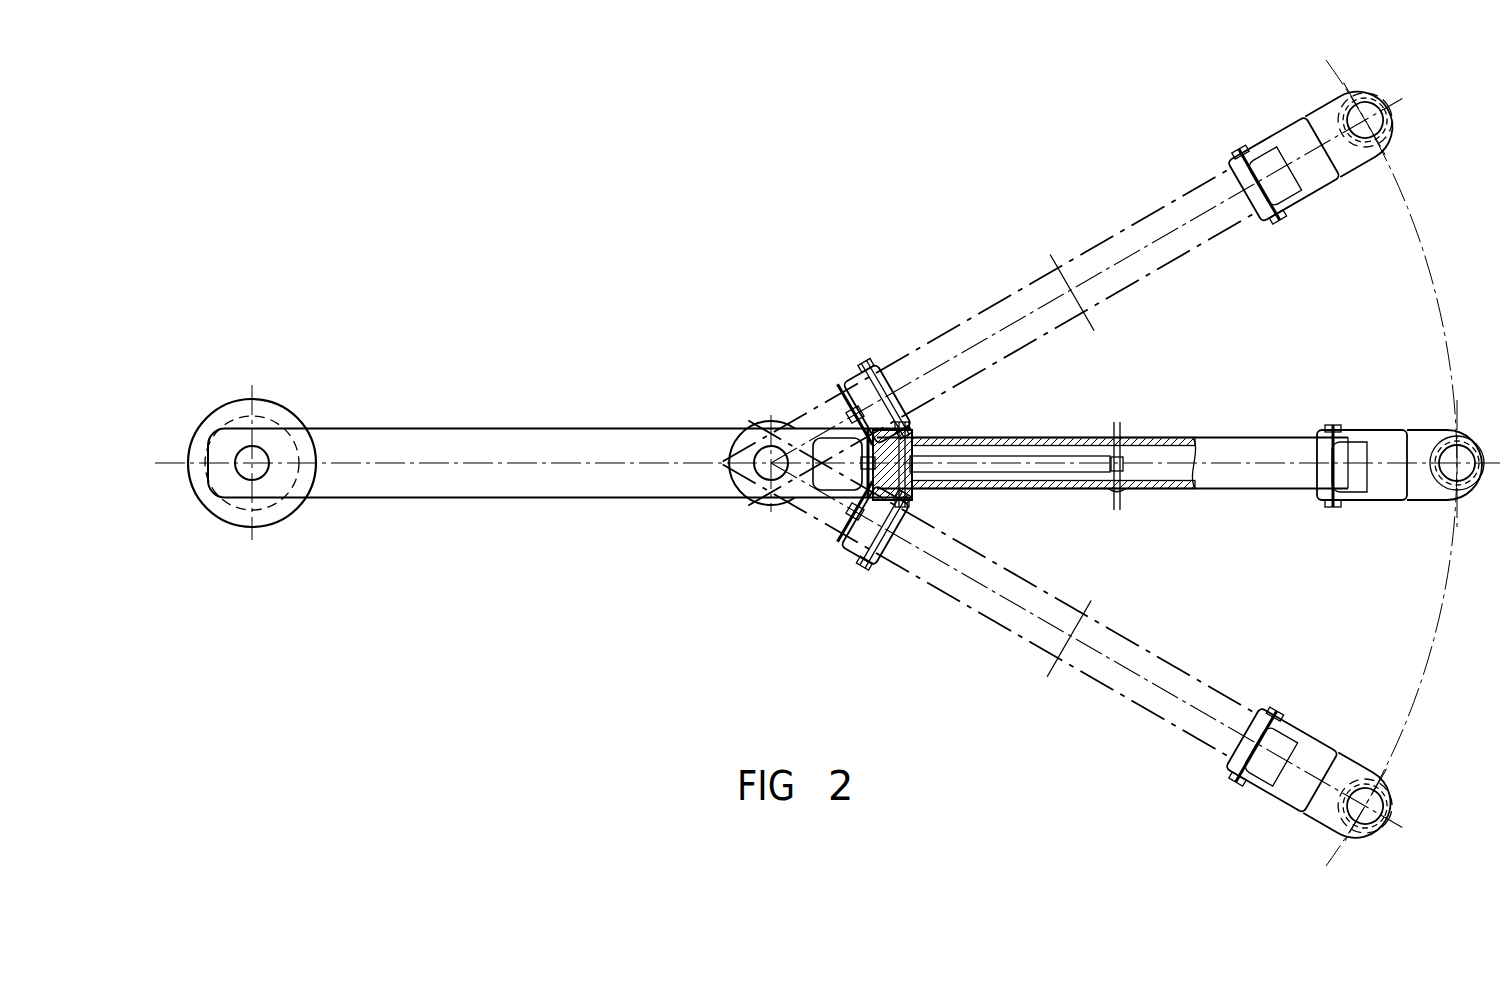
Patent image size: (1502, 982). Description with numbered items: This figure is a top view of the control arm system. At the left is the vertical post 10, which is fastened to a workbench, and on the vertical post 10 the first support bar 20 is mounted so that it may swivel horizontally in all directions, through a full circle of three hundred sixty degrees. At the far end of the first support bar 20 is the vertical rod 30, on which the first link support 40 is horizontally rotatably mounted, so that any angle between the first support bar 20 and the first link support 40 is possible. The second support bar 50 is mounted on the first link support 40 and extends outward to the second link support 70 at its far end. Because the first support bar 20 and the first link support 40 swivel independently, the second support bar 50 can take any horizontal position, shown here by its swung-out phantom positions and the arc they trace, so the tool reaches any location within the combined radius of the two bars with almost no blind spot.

The vertical post 10 is at (233, 401).
The first support bar 20 is at (480, 499).
The vertical rod 30 is at (758, 446).
The first link support 40 is at (746, 502).
The second support bar 50 is at (1262, 447).
The second link support 70 is at (1395, 500).